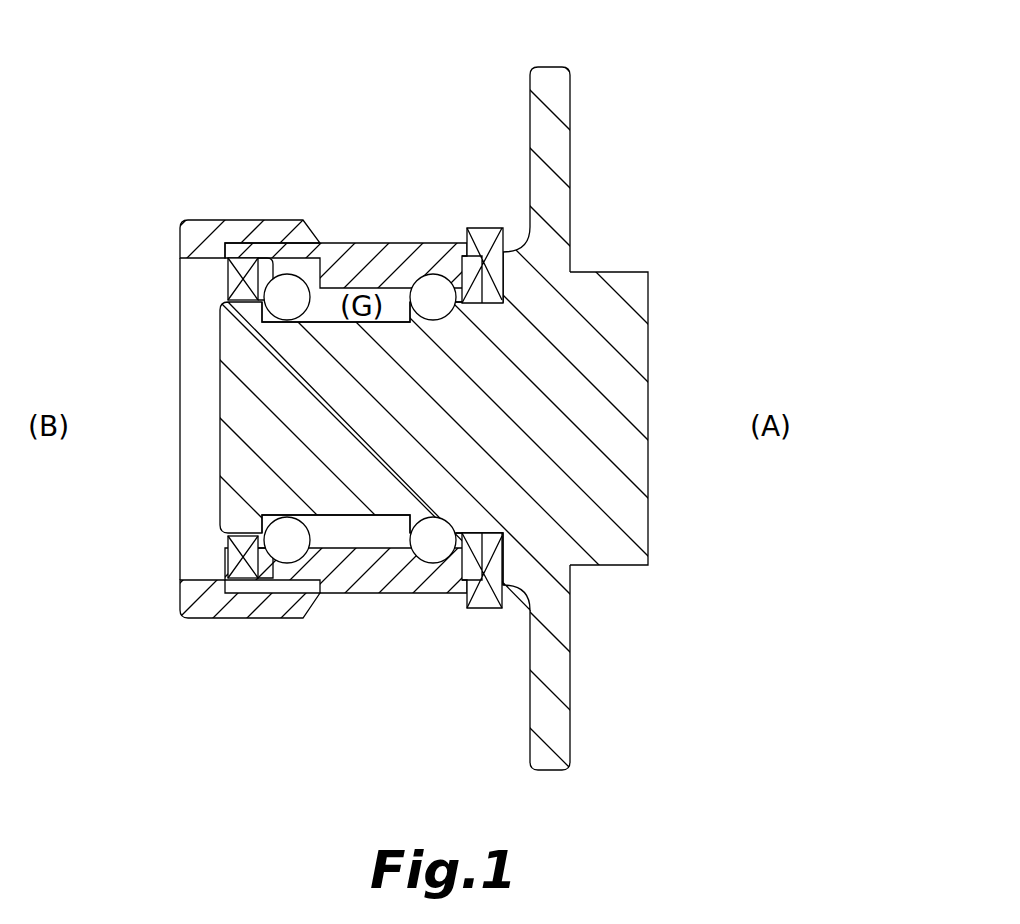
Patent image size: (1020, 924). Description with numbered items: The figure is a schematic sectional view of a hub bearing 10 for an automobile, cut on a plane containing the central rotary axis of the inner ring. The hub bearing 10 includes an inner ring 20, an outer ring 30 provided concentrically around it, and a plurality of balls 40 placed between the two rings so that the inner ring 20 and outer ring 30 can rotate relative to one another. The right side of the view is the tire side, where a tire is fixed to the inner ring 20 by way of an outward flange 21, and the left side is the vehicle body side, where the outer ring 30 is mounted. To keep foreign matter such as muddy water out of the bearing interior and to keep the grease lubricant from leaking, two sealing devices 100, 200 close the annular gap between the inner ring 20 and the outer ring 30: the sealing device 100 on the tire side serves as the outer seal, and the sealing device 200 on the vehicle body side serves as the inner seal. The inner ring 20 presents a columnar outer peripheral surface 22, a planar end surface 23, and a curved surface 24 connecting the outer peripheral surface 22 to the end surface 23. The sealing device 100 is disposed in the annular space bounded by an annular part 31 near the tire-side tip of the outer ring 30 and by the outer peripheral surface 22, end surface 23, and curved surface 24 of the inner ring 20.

The hub bearing 10 is at (510, 462).
The inner ring 20 is at (559, 462).
The outward flange 21 is at (560, 152).
The outer peripheral surface 22 is at (467, 243).
The end surface 23 is at (493, 243).
The curved surface 24 is at (473, 247).
The outer ring 30 is at (197, 182).
The annular part 31 is at (478, 247).
The balls 40 is at (292, 547).
The sealing device 100 is at (473, 590).
The sealing device 200 is at (237, 560).